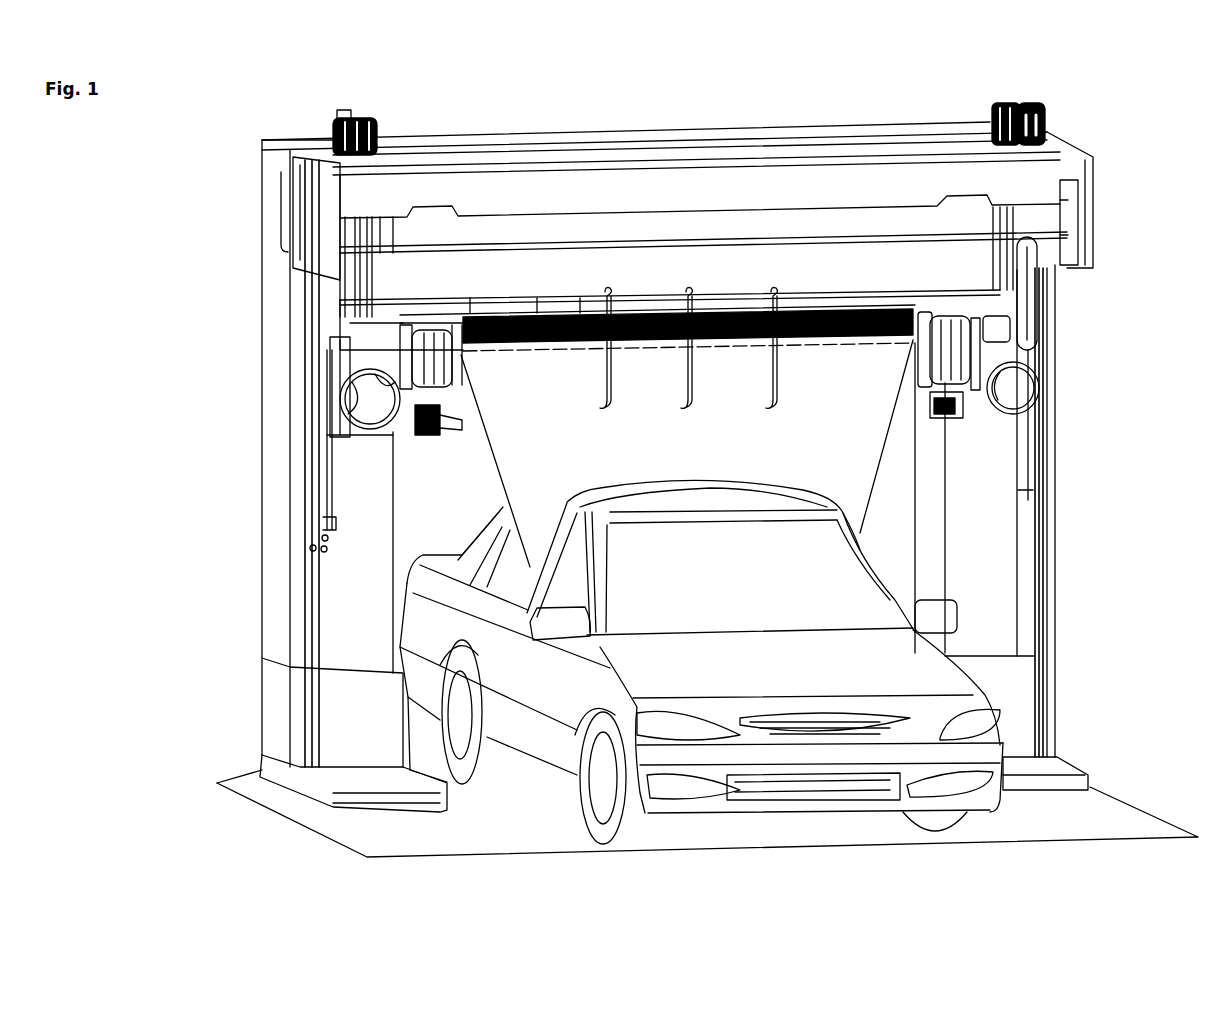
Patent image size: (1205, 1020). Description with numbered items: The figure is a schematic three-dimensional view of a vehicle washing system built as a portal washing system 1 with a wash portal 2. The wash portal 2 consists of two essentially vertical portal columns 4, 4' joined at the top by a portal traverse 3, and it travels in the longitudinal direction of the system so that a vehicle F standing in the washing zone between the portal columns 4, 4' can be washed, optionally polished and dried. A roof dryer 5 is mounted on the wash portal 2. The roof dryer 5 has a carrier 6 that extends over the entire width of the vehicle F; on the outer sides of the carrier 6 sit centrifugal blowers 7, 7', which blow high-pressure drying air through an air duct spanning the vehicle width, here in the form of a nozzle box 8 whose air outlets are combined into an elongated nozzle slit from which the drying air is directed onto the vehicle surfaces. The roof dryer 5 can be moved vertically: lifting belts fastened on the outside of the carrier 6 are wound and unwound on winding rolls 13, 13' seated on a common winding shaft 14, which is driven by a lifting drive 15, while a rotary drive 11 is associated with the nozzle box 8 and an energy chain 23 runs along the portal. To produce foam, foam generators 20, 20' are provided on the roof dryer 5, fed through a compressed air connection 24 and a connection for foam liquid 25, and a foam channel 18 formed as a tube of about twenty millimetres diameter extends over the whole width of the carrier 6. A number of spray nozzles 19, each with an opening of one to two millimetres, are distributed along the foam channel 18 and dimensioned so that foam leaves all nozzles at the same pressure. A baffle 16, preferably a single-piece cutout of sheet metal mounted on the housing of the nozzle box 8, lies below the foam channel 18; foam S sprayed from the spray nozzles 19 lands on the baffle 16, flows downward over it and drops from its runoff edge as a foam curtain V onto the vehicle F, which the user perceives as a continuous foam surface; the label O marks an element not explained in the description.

The portal washing system 1 is at (1097, 126).
The wash portal 2 is at (258, 170).
The portal traverse 3 is at (285, 138).
The portal column 4 is at (321, 622).
The portal column 4' is at (1061, 527).
The roof dryer 5 is at (1013, 328).
The carrier 6 is at (405, 321).
The centrifugal blower 7 is at (298, 408).
The centrifugal blower 7' is at (1053, 388).
The nozzle box 8 is at (450, 327).
The rotary drive 11 is at (913, 312).
The winding roll for lifting belt 13 is at (382, 115).
The winding roll for lifting belt 13' is at (980, 109).
The winding shaft 14 is at (604, 140).
The lifting drive 15 is at (1040, 107).
The baffle 16 is at (457, 418).
The foam channel 18 is at (537, 312).
The spray nozzle 19 is at (578, 312).
The foam generator 20 is at (295, 380).
The foam generator 20' is at (1022, 365).
The energy chain 23 is at (323, 305).
The compressed air connection 24 is at (310, 549).
The connection for foam liquid 25 is at (321, 538).
The foam spray jets S is at (818, 347).
The foam curtain V is at (505, 473).
The opening O is at (1024, 514).
The vehicle F is at (877, 808).